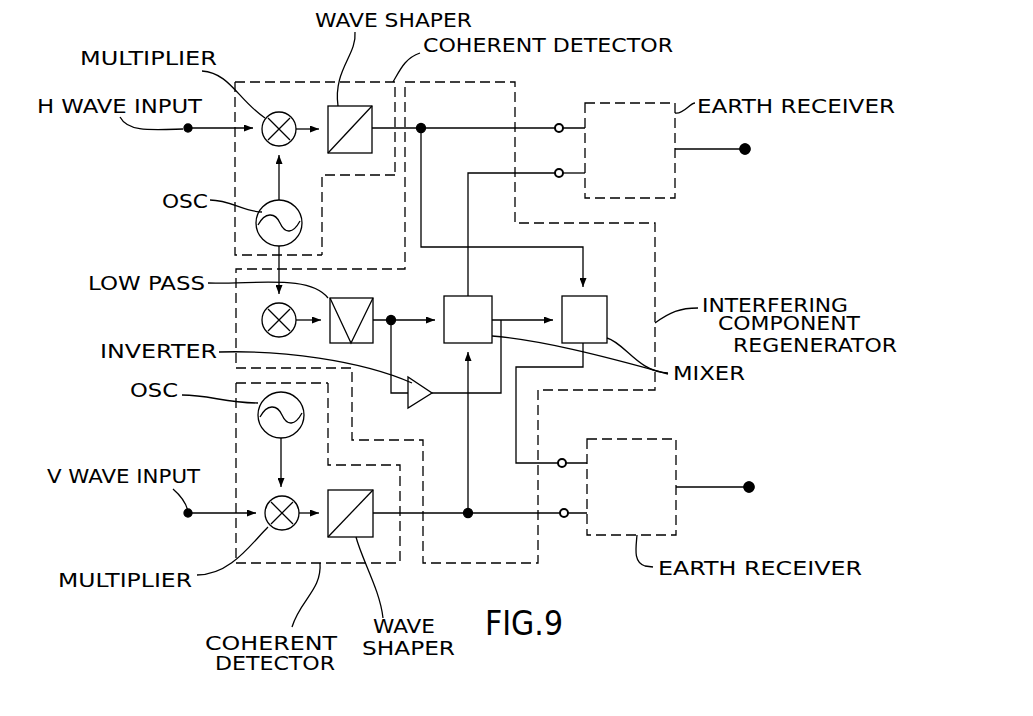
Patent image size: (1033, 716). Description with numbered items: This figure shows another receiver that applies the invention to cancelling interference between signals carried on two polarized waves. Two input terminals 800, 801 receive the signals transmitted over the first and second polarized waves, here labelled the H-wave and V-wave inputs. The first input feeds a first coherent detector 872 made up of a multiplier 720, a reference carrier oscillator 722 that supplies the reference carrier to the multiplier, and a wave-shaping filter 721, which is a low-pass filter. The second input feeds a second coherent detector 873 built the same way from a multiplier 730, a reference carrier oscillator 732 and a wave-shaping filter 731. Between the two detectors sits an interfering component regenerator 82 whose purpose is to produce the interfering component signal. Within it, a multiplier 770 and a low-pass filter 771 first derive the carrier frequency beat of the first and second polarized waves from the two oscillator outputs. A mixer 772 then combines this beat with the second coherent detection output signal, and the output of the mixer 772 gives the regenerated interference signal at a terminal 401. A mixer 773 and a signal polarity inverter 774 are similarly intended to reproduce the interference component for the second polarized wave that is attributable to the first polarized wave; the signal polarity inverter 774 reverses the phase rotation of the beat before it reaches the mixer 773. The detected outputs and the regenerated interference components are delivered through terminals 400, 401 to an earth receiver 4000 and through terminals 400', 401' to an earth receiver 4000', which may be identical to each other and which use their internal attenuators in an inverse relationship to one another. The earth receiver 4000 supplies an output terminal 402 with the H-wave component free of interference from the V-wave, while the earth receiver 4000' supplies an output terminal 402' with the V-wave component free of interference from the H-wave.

The multiplier 720 is at (280, 112).
The wave-shaping filter 721 is at (345, 106).
The reference carrier oscillator 722 is at (256, 233).
The input terminal 800 is at (186, 133).
The input terminal 801 is at (183, 518).
The multiplier 730 is at (283, 532).
The wave-shaping filter 731 is at (370, 537).
The reference carrier oscillator 732 is at (258, 425).
The multiplier 770 is at (262, 320).
The low-pass filter 771 is at (367, 298).
The mixer 772 is at (477, 295).
The mixer 773 is at (603, 294).
The signal polarity inverter 774 is at (420, 403).
The interfering component regenerator 82 is at (655, 286).
The first coherent detector 872 is at (358, 215).
The second coherent detector 873 is at (350, 563).
The terminal 400 is at (560, 94).
The terminal 401 is at (541, 160).
The terminal 400' is at (562, 442).
The terminal 401' is at (576, 546).
The earth receiver 4000 is at (649, 133).
The earth receiver 4000' is at (667, 477).
The output terminal 402 is at (777, 166).
The output terminal 402' is at (785, 480).